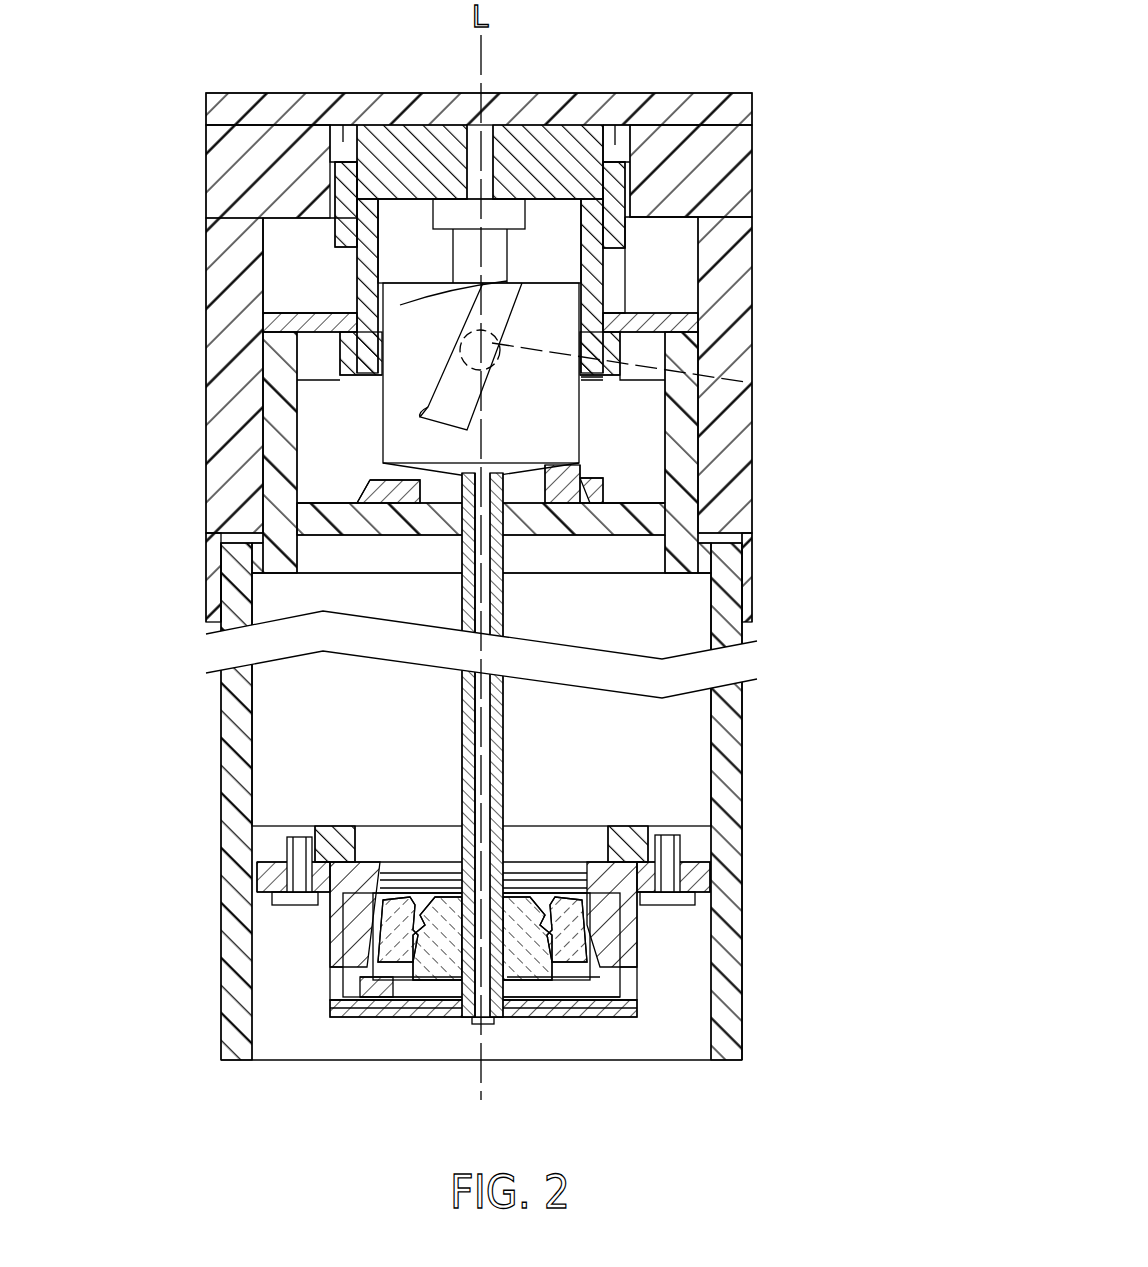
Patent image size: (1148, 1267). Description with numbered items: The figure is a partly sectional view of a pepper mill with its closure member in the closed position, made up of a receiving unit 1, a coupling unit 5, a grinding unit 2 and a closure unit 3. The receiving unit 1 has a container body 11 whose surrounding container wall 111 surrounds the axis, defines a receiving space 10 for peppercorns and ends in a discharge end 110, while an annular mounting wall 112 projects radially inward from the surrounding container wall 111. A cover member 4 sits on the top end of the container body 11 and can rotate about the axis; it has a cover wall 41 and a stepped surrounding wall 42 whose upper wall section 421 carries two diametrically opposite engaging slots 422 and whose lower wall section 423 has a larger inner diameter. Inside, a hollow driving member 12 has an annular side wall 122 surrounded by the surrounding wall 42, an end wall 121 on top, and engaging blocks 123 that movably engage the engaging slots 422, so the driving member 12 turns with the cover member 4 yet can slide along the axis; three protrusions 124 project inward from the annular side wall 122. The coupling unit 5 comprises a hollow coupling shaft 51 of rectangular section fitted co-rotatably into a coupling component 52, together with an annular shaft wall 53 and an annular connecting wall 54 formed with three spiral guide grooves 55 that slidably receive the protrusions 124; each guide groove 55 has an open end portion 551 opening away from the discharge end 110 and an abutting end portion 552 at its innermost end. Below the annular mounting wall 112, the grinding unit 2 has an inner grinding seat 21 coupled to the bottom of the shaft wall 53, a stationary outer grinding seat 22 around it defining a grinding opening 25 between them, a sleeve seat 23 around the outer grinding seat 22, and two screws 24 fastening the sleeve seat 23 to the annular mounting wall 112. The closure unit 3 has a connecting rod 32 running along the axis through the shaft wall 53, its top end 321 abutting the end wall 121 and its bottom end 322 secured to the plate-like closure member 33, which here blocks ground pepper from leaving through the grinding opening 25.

The receiving unit 1 is at (770, 465).
The grinding unit 2 is at (650, 960).
The closure unit 3 is at (360, 1034).
The cover member 4 is at (762, 316).
The coupling unit 5 is at (525, 600).
The receiving space 10 is at (280, 775).
The container body 11 is at (755, 745).
The driving member 12 is at (627, 234).
The inner grinding seat 21 is at (525, 980).
The outer grinding seat 22 is at (560, 980).
The sleeve seat 23 is at (630, 965).
The screws 24 is at (290, 872).
The grinding opening 25 is at (400, 975).
The connecting rod 32 is at (470, 972).
The closure member 33 is at (370, 1012).
The cover wall 41 is at (578, 105).
The surrounding wall 42 is at (730, 265).
The coupling shaft 51 is at (510, 712).
The coupling component 52 is at (580, 423).
The shaft wall 53 is at (470, 740).
The connecting wall 54 is at (393, 443).
The guide grooves 55 is at (457, 382).
The discharge end 110 is at (270, 1062).
The surrounding container wall 111 is at (730, 895).
The annular mounting wall 112 is at (690, 848).
The end wall 121 is at (418, 140).
The annular side wall 122 is at (355, 275).
The engaging blocks 123 is at (345, 185).
The protrusions 124 is at (700, 385).
The top end 321 is at (512, 218).
The bottom end 322 is at (478, 1024).
The upper wall section 421 is at (648, 185).
The engaging slots 422 is at (343, 130).
The lower wall section 423 is at (700, 180).
The open end portion 551 is at (400, 305).
The abutting end portion 552 is at (383, 393).